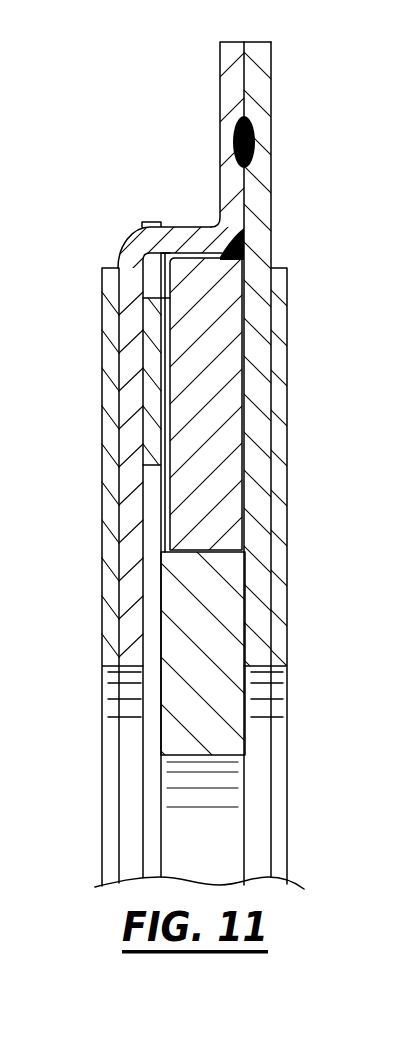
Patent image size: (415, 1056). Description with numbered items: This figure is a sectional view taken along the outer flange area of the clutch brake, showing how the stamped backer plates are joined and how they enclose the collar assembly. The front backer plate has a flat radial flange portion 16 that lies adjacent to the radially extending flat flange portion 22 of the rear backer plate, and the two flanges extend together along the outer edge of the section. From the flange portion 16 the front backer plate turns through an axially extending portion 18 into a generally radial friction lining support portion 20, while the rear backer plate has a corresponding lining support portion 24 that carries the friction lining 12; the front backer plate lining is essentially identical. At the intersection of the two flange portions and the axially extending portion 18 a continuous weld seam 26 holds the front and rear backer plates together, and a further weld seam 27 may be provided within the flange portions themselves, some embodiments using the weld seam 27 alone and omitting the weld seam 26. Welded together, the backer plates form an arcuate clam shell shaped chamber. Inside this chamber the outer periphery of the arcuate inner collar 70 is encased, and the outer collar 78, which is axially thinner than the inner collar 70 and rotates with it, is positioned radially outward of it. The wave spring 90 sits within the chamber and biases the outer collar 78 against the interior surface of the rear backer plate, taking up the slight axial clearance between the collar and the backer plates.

The friction lining 12 is at (102, 268).
The flat radial flange portion 16 is at (220, 112).
The axially extending portion 18 is at (173, 226).
The friction lining support portion 20 is at (127, 527).
The radially extending flat flange portion 22 is at (272, 157).
The lining support portion 24 is at (267, 404).
The continuous weld seam 26 is at (231, 241).
The weld seam 27 is at (255, 126).
The arcuate inner collar 70 is at (237, 580).
The outer collar 78 is at (233, 480).
The wave spring 90 is at (145, 422).